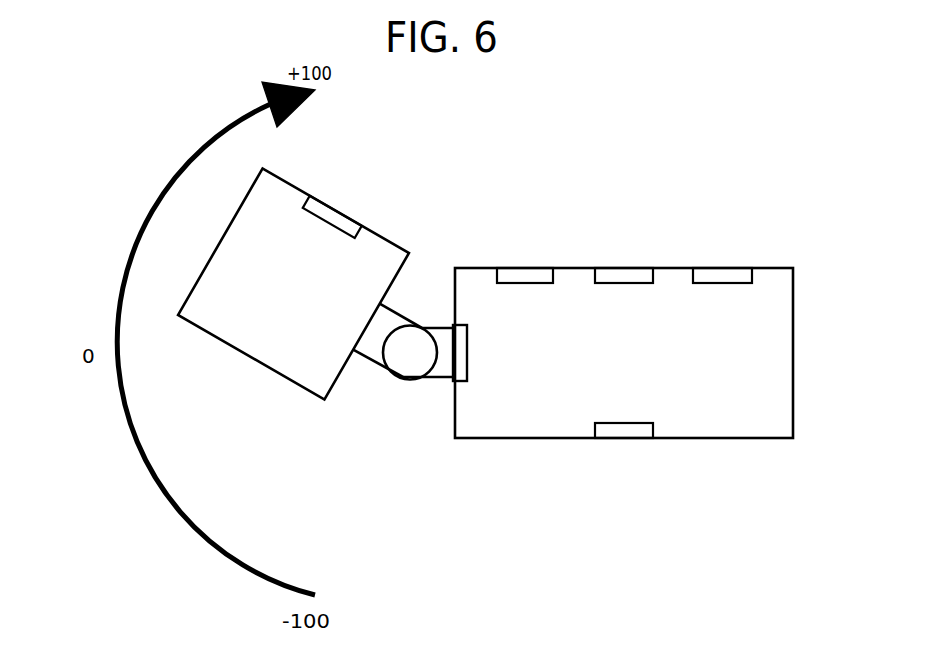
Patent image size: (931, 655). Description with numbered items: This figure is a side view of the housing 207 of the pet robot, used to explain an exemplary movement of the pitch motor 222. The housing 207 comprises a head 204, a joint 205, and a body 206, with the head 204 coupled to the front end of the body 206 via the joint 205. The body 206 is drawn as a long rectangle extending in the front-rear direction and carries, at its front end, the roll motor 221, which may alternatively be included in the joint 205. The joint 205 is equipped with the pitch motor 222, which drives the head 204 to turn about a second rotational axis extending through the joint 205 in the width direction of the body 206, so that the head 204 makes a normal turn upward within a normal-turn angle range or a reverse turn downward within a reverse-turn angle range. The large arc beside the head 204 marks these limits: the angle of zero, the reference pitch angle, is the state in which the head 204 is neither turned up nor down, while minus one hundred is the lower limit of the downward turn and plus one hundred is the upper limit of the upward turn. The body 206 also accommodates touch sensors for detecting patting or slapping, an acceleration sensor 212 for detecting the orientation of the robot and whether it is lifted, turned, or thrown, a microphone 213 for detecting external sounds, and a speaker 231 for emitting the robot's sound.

The head 204 is at (293, 300).
The joint 205 is at (437, 363).
The body 206 is at (523, 438).
The housing 207 is at (624, 329).
The acceleration sensor 212 is at (627, 384).
The microphone 213 is at (716, 284).
The roll motor 221 is at (467, 365).
The pitch motor 222 is at (393, 330).
The speaker 231 is at (530, 284).